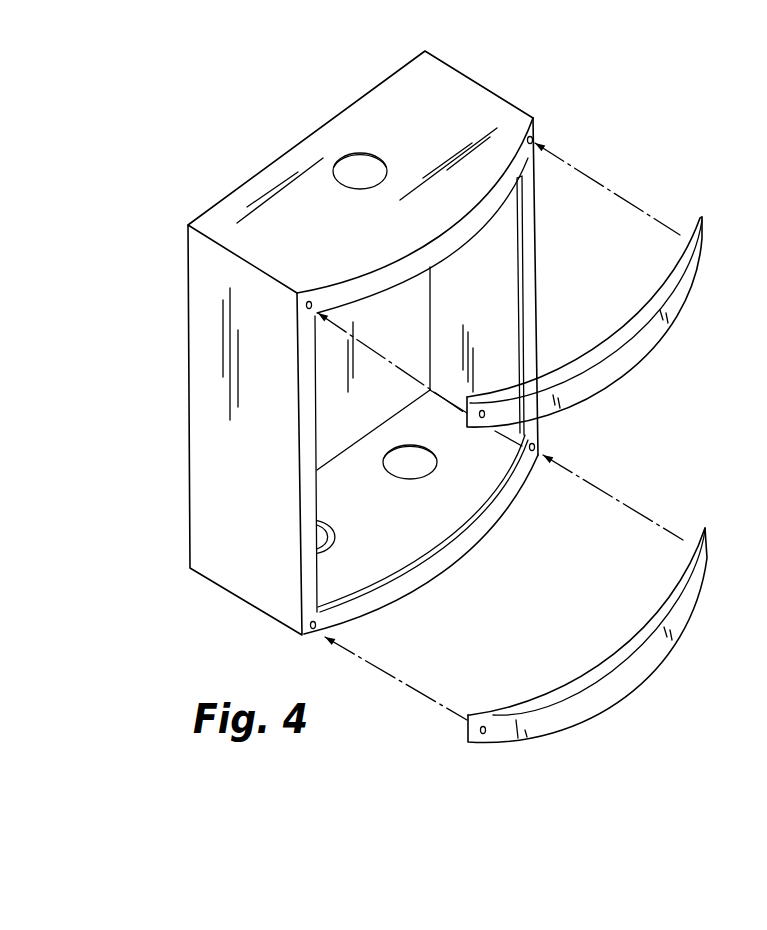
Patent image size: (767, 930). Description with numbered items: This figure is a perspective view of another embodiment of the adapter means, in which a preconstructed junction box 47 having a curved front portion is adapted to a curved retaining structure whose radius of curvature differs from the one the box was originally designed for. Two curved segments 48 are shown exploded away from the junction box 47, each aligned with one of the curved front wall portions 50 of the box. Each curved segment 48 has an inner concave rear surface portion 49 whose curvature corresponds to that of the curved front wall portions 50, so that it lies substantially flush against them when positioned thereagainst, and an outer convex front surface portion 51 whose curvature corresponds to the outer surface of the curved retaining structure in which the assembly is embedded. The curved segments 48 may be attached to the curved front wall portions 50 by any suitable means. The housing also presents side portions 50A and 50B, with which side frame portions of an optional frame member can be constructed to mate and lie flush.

The junction box 47 is at (188, 357).
The curved segments 48 is at (607, 488).
The inner concave rear surface portion 49 is at (632, 303).
The curved front wall portions 50 is at (450, 237).
The housing side portion 50A is at (307, 458).
The housing side portion 50B is at (527, 192).
The outer convex front surface portion 51 is at (625, 362).